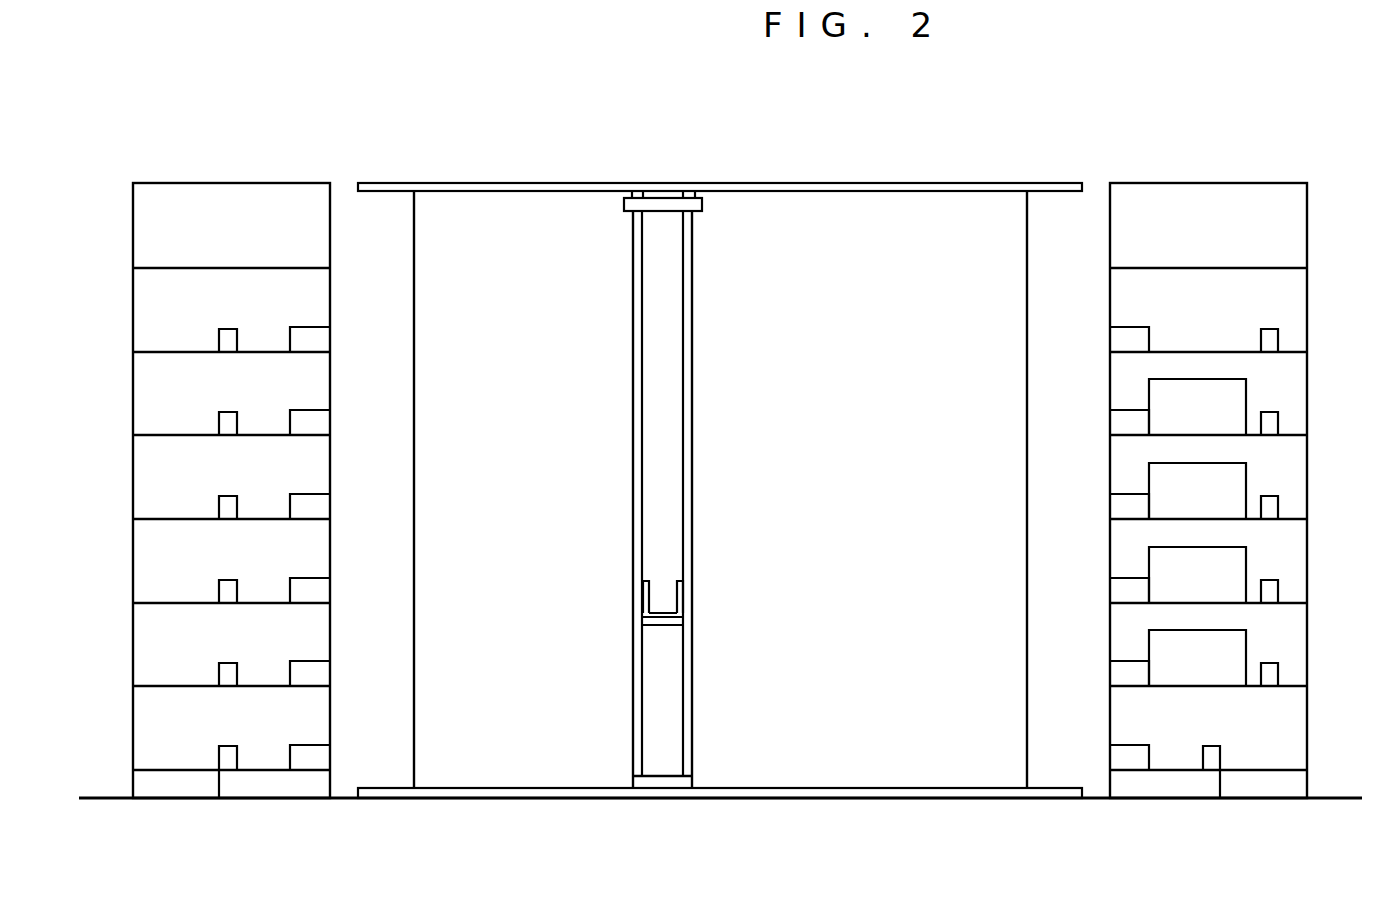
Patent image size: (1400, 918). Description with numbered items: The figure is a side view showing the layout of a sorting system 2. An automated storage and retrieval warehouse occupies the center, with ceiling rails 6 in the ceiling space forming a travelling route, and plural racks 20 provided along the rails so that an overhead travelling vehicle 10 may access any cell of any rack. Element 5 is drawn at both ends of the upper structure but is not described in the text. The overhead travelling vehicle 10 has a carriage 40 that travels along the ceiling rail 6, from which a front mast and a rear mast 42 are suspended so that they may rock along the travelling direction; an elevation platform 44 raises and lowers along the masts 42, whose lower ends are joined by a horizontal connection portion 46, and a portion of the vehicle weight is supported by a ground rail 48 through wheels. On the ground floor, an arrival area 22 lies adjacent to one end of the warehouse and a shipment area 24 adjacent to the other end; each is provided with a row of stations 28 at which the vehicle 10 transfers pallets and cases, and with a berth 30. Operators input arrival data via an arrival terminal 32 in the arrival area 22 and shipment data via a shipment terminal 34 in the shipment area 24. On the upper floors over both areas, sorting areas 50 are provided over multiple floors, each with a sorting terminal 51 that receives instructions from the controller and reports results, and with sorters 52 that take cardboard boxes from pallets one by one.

The sorting system 2 is at (674, 910).
The upper frame beam 5 is at (342, 183).
The ceiling rail 6 is at (1052, 195).
The overhead travelling vehicle 10 is at (705, 489).
The rack 20 is at (898, 757).
The arrival area 22 is at (155, 717).
The shipment area 24 is at (1283, 713).
The station 28 is at (306, 330).
The berth 30 is at (143, 781).
The arrival terminal 32 is at (230, 749).
The shipment terminal 34 is at (1212, 750).
The carriage 40 is at (708, 210).
The mast 42 is at (683, 393).
The elevation platform 44 is at (655, 625).
The connection portion 46 is at (662, 782).
The ground rail 48 is at (1052, 787).
The sorting area 50 is at (148, 310).
The sorting terminal 51 is at (227, 329).
The sorter 52 is at (1236, 398).